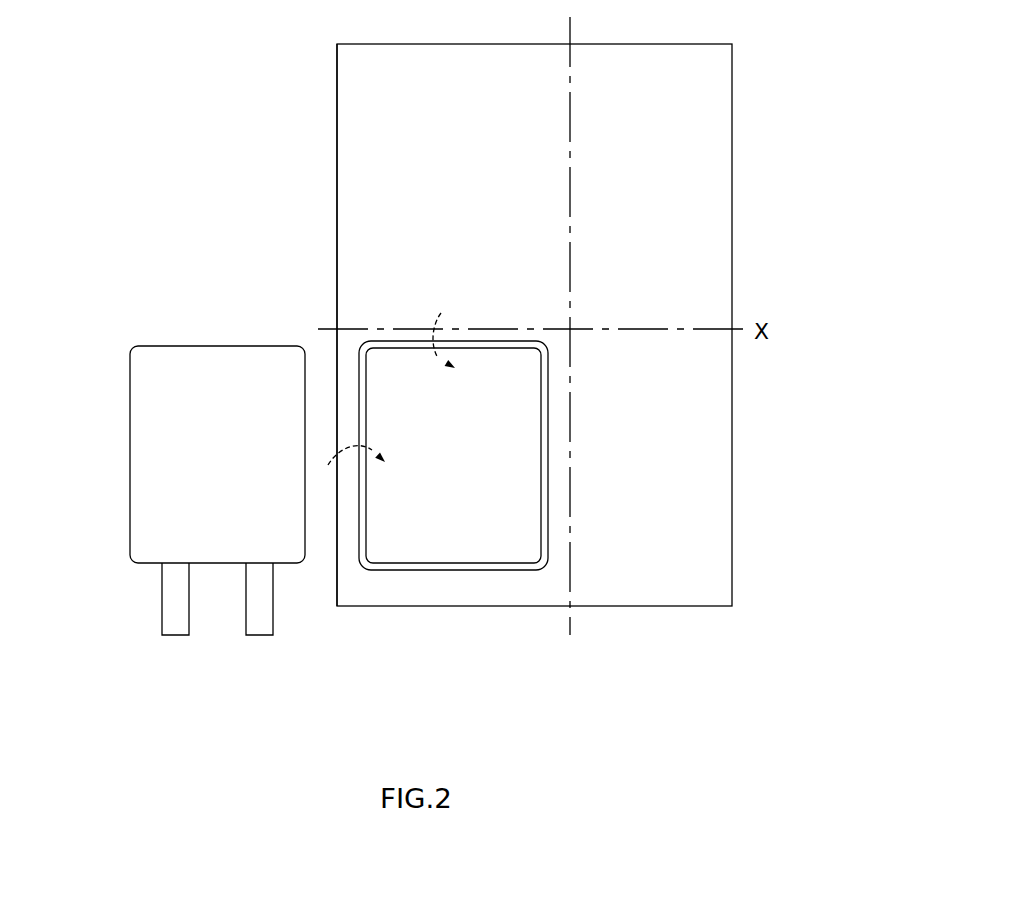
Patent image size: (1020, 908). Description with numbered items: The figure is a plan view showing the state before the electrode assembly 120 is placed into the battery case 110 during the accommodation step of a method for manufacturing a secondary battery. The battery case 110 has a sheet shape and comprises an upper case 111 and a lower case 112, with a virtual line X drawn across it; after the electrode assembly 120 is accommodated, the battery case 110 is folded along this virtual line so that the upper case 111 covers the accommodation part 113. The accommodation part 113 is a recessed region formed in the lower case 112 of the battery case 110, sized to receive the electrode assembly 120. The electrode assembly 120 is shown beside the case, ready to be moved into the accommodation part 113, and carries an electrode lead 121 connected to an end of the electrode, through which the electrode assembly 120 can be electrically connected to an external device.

The battery case 110 is at (742, 64).
The upper case 111 is at (357, 103).
The lower case 112 is at (345, 390).
The accommodation part 113 is at (408, 536).
The electrode assembly 120 is at (99, 431).
The electrode lead 121 is at (168, 597).